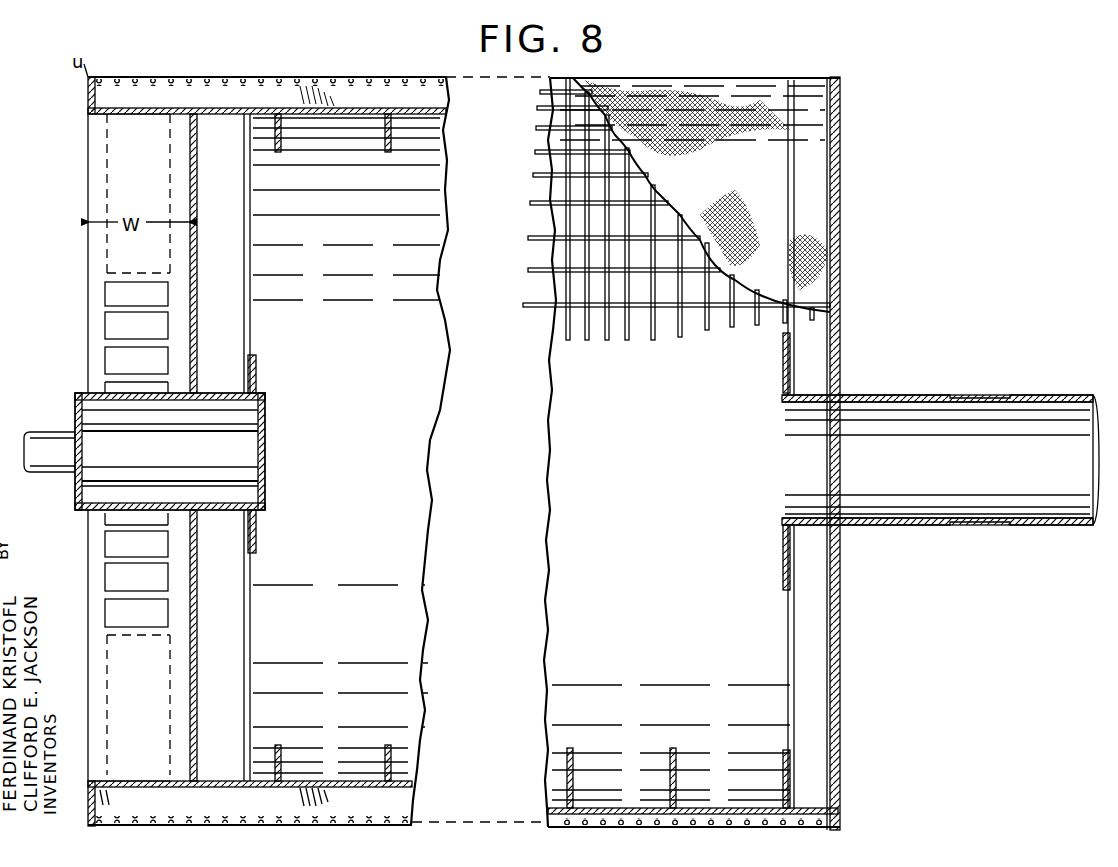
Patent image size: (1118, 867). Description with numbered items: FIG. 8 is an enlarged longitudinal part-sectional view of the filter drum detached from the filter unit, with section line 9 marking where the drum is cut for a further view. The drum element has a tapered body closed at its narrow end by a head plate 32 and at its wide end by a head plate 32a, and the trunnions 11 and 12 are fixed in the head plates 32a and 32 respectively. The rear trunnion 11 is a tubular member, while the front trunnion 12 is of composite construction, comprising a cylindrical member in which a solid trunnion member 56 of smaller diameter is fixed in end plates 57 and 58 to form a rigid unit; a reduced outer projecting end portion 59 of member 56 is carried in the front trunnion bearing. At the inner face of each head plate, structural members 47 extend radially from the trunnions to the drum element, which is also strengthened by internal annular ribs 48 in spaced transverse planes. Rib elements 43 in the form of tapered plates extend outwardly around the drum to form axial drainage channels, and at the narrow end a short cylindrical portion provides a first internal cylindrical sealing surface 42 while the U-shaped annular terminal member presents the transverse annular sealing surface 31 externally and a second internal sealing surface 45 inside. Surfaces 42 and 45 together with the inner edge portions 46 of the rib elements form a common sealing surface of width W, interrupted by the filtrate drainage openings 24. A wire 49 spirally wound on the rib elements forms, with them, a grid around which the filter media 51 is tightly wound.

The section line 9- 9 is at (15, 85).
The trunnion 11 is at (905, 395).
The trunnion 12 is at (95, 393).
The filtrate drainage openings 24 is at (115, 355).
The transverse annular sealing surface 31 is at (88, 100).
The head plate 32 is at (192, 256).
The head plate 32a is at (840, 614).
The first internal narrow cylindrical sealing surface 42 is at (183, 114).
The rib elements 43 is at (440, 92).
The second narrow internal cylindrical sealing surface 45 is at (98, 118).
The inner edge portions 46 is at (149, 276).
The structural members 47 is at (232, 288).
The internal annular ribs 48 is at (282, 140).
The wire 49 is at (246, 84).
The filter media 51 is at (335, 77).
The solid trunnion member 56 is at (184, 466).
The end plate 57 is at (266, 450).
The end plate 58 is at (75, 498).
The outer projecting end portion 59 is at (57, 440).